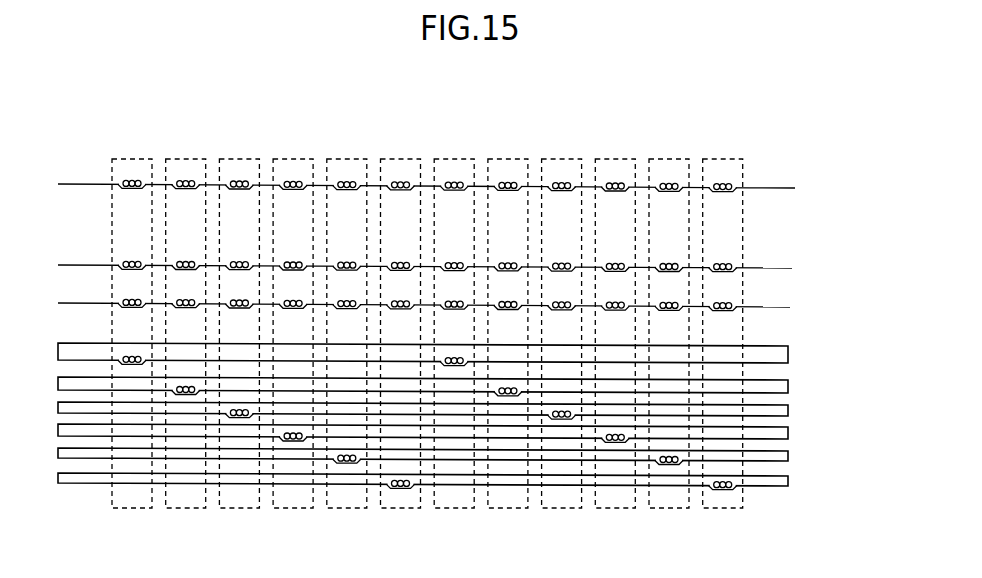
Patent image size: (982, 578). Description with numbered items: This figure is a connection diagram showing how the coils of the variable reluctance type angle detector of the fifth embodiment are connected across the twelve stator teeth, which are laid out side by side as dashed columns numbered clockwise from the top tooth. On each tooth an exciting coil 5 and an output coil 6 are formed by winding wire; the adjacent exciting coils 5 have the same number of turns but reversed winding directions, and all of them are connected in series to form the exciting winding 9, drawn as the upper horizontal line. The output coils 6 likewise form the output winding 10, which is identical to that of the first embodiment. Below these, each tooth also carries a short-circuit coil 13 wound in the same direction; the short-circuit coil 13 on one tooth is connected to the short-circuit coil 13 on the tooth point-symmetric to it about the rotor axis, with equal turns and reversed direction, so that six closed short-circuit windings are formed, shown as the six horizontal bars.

The exciting coil 5 is at (132, 192).
The output coil 6 is at (130, 310).
The exciting winding 9 is at (772, 188).
The output winding 10 is at (770, 268).
The short-circuit coil 13 is at (717, 488).